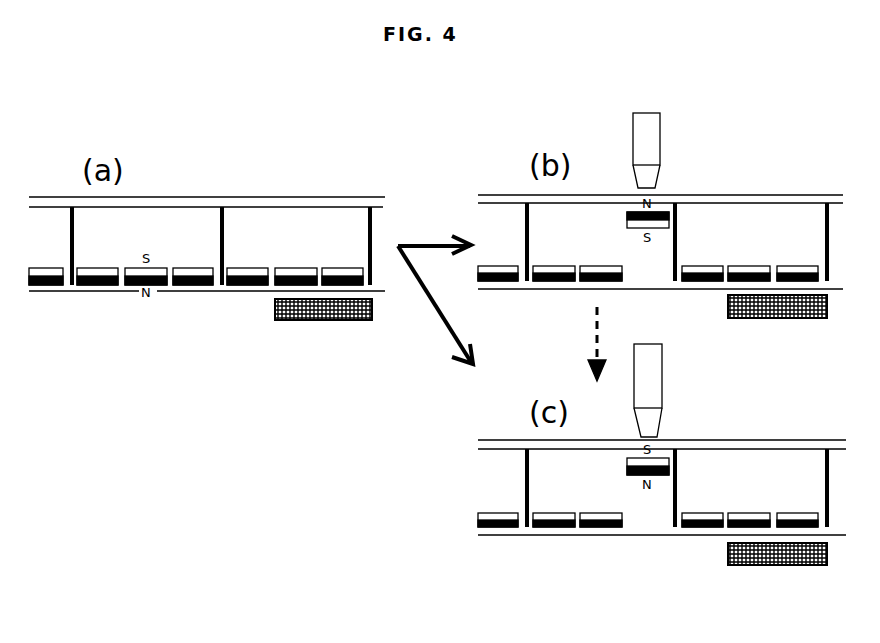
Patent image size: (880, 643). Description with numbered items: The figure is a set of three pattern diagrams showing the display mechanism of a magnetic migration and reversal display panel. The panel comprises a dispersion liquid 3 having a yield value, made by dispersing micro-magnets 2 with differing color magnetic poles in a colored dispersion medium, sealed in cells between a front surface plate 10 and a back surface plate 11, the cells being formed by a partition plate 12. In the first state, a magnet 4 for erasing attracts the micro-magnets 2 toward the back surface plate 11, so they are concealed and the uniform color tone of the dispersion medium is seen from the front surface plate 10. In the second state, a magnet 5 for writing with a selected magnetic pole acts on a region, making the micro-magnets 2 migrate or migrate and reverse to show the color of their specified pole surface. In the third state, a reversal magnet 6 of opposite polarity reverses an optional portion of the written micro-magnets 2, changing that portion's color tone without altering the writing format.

The micro-magnets 2 is at (55, 266).
The dispersion liquid 3 is at (354, 233).
The magnet for erasing 4 is at (318, 320).
The magnet for writing 5 is at (646, 143).
The reversal magnet 6 is at (646, 385).
The front surface plate 10 is at (316, 191).
The back surface plate 11 is at (212, 292).
The partition plate 12 is at (375, 273).